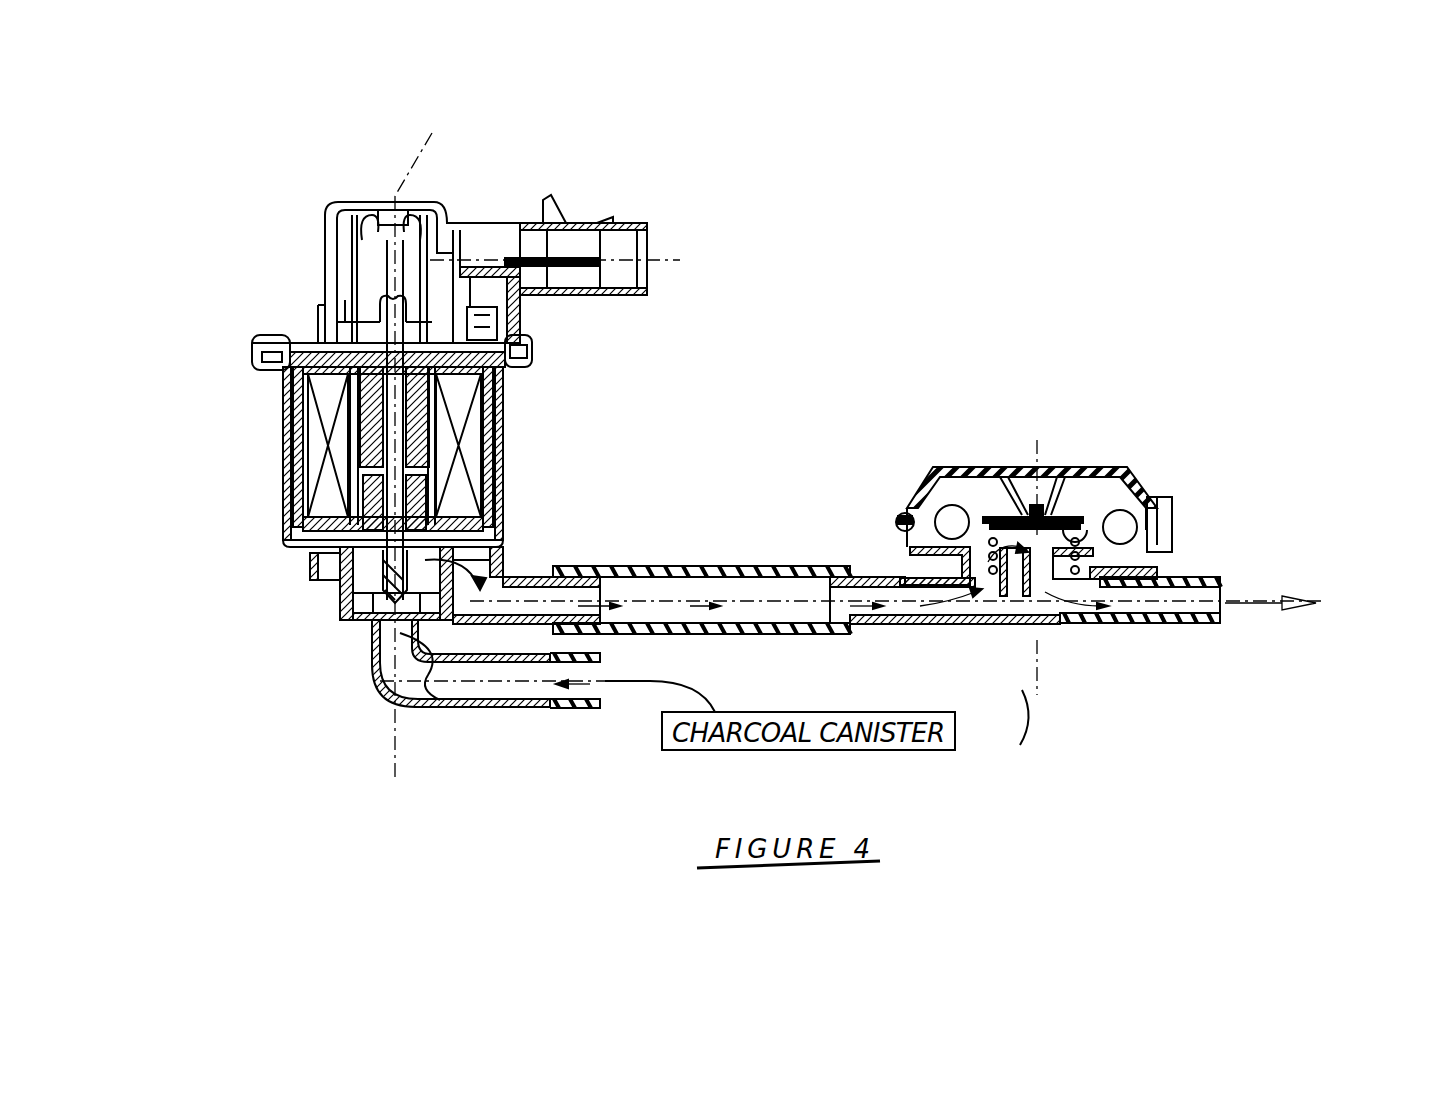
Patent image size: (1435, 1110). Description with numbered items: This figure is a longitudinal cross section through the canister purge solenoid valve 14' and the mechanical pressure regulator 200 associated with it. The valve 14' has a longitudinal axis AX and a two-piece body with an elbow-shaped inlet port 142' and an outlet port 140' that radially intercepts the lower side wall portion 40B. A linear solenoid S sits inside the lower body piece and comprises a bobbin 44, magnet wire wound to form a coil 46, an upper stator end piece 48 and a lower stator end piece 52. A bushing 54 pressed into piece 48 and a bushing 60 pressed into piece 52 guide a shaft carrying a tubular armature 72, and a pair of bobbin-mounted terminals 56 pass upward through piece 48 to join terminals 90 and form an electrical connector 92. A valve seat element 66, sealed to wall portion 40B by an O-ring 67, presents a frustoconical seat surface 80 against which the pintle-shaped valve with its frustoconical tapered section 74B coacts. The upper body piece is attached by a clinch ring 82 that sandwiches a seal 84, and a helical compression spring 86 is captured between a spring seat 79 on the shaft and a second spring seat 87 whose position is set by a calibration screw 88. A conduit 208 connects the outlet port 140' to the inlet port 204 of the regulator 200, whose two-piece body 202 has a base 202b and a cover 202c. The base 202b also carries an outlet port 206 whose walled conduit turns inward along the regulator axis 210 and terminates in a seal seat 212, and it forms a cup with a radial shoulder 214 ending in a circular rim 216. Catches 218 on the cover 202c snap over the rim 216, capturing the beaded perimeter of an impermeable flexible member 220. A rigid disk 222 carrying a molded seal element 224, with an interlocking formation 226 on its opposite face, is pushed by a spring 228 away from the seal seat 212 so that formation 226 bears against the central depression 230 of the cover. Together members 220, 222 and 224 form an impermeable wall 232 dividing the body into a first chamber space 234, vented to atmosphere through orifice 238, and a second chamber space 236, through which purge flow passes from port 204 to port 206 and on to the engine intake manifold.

The longitudinal axis AX is at (433, 441).
The helical coiled linear compression spring 86 is at (340, 283).
The spring seat 79 is at (320, 312).
The calibration screw 88 is at (405, 209).
The spring seat 87 is at (420, 236).
The electrical connector 92 is at (568, 216).
The terminals 90 is at (608, 258).
The bobbin-mounted electrical terminals 56 is at (500, 338).
The seal 84 is at (258, 356).
The clinch ring 82 is at (524, 348).
The upper stator end piece 48 is at (295, 375).
The linear solenoid S is at (498, 461).
The bushing 54 is at (347, 387).
The bobbin 44 is at (348, 440).
The bobbin-mounted electromagnetic coil 46 is at (358, 482).
The tubular armature 72 is at (410, 432).
The bushing 60 is at (500, 518).
The lower stator end piece 52 is at (345, 570).
The lower side wall portion 40B is at (338, 612).
The frustoconical seat surface 80 is at (372, 615).
The valve seat element 66 is at (465, 606).
The O-ring 67 is at (425, 695).
The frustoconical tapered section 74B is at (385, 652).
The inlet port 142' is at (550, 664).
The canister purge solenoid valve 14' is at (897, 464).
The outlet port 140' is at (588, 556).
The conduit 208 is at (722, 572).
The inlet port 204 is at (943, 627).
The outlet port 206 is at (1195, 630).
The mechanical pressure regulator 200 is at (1160, 462).
The cover 202c is at (975, 466).
The fluid impermeable wall 232 is at (1125, 520).
The central depression 230 is at (1040, 518).
The interlocking circular formation 226 is at (1000, 514).
The first chamber space 234 is at (1055, 522).
The atmospheric vent orifice 238 is at (1090, 514).
The rigid circular disk 222 is at (950, 504).
The circular seal element 224 is at (1105, 528).
The two-piece body 202 is at (902, 516).
The catches 218 is at (893, 520).
The circular rim 216 is at (903, 530).
The impermeable flexible member 220 is at (912, 542).
The circular annular radial shoulder 214 is at (933, 557).
The helical coiled compression spring 228 is at (993, 578).
The seal seat 212 is at (1030, 600).
The base 202b is at (1160, 578).
The second chamber space 236 is at (1165, 538).
The axis 210 is at (1056, 698).